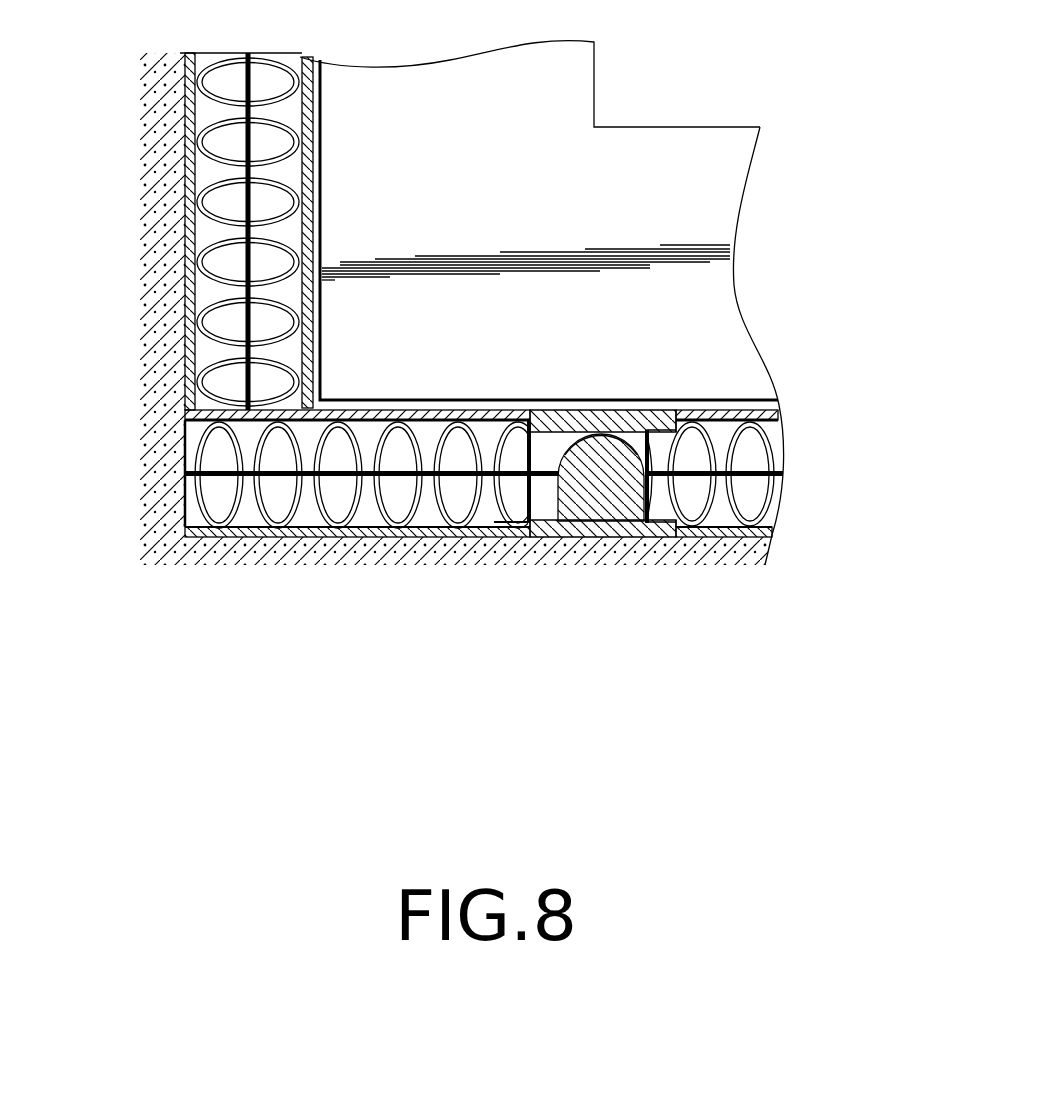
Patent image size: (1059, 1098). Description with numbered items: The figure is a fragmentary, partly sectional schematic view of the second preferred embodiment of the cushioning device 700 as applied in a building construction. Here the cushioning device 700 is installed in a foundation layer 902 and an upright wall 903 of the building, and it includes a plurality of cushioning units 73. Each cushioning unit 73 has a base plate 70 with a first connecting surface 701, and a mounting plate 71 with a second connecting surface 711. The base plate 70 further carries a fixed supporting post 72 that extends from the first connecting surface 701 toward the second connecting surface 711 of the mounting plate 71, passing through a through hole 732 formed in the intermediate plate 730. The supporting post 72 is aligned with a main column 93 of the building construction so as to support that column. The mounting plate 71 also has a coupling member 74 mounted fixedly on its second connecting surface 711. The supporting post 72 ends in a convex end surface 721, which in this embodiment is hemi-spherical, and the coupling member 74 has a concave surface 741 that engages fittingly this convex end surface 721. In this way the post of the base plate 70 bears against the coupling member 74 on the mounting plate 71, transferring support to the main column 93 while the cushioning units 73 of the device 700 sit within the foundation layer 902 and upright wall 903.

The main column 93 is at (520, 110).
The upright wall 903 is at (165, 155).
The foundation layer 902 is at (722, 552).
The base plate 70 is at (188, 208).
The mounting plate 71 is at (315, 187).
The second connecting surface 711 is at (748, 440).
The cushioning unit 73 is at (200, 287).
The intermediate plate 730 is at (782, 474).
The cushioning device 700 is at (806, 454).
The first connecting surface 701 is at (742, 512).
The supporting post 72 is at (602, 486).
The convex end surface 721 is at (583, 483).
The through hole 732 is at (642, 484).
The coupling member 74 is at (588, 432).
The concave surface 741 is at (606, 432).